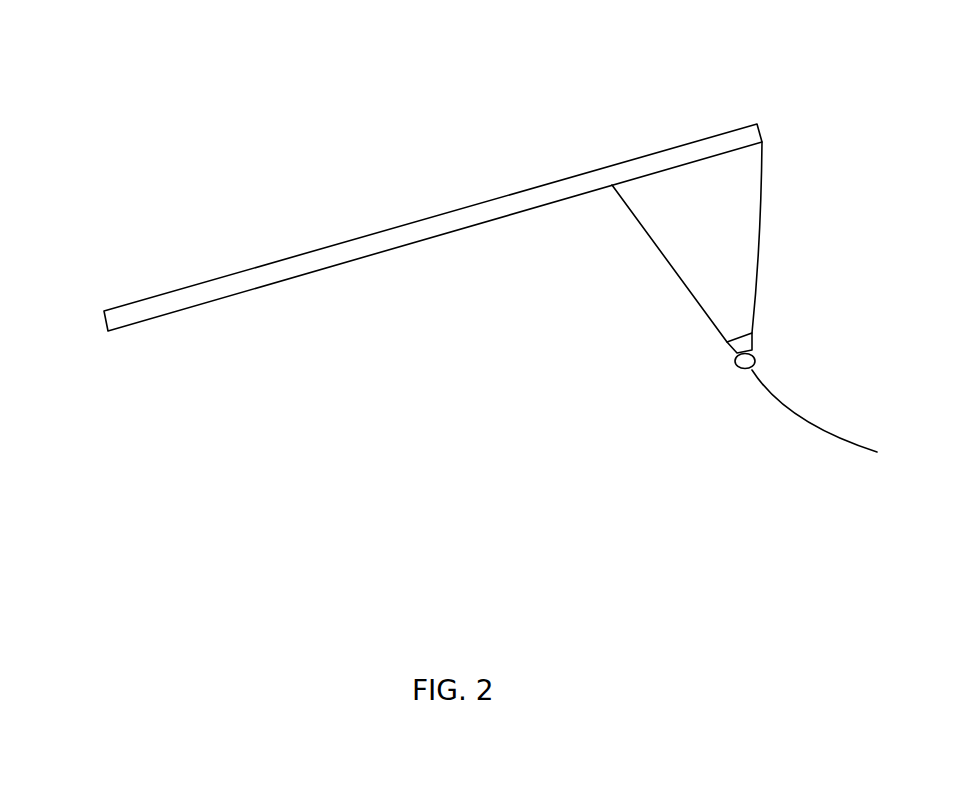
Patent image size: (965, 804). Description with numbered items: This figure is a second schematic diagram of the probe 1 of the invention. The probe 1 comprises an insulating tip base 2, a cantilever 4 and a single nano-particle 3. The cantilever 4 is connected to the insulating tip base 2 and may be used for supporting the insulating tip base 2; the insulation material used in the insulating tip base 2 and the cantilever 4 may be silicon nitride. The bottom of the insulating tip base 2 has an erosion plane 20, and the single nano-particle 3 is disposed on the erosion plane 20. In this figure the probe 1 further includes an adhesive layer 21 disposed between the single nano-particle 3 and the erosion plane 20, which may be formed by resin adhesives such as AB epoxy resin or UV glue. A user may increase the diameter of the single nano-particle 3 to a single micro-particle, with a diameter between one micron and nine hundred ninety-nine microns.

The probe 1 is at (108, 92).
The insulating tip base 2 is at (828, 240).
The cantilever 4 is at (673, 147).
The erosion plane 20 is at (745, 332).
The adhesive layer 21 is at (750, 345).
The single nano-particle 3 is at (830, 425).